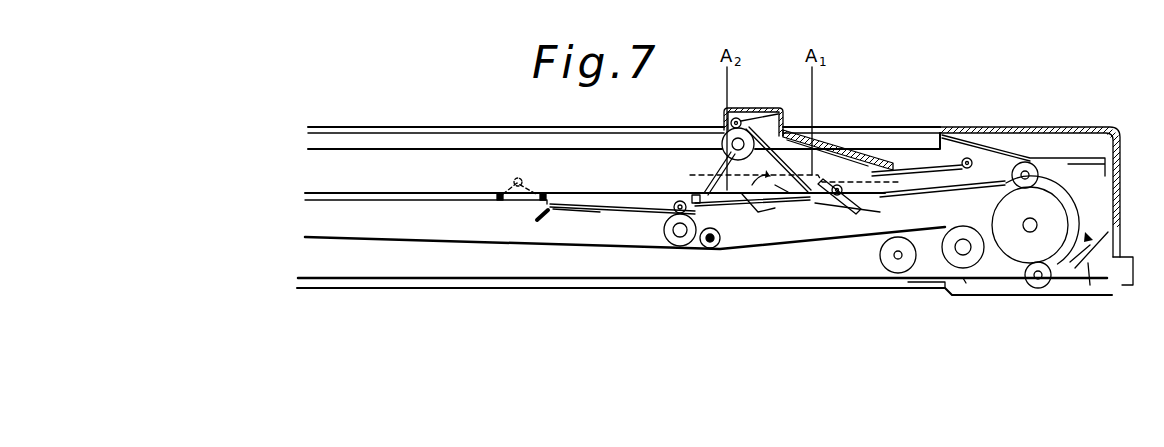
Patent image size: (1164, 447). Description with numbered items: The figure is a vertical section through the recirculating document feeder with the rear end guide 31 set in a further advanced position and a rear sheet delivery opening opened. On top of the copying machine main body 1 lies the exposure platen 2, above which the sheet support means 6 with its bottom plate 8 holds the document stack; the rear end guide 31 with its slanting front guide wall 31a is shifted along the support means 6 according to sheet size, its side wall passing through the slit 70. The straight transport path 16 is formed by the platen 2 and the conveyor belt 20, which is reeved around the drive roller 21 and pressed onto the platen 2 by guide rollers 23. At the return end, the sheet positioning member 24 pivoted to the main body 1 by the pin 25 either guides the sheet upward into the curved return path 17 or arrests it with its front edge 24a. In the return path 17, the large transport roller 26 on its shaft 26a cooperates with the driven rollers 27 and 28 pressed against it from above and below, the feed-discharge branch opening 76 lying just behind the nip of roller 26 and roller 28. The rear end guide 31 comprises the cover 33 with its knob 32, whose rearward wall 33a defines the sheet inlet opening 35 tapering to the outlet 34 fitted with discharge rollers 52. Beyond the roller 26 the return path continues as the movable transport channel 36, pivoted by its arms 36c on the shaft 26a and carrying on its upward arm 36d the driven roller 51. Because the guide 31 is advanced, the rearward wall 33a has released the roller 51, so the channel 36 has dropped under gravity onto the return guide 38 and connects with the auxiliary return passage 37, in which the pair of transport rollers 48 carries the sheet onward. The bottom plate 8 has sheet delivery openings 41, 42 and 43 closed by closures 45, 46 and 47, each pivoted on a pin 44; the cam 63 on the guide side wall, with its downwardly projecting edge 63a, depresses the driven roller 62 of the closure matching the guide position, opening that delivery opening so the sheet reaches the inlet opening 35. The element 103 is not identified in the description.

The main body 1 is at (1104, 288).
The exposure platen 2 is at (490, 273).
The sheet support means 6 is at (412, 157).
The bottom plate 8 is at (405, 195).
The straight transport path 16 is at (435, 279).
The curved return path 17 is at (1080, 217).
The conveyor belt 20 is at (475, 238).
The drive roller 21 is at (944, 251).
The guide rollers 23 is at (893, 277).
The sheet positioning member 24 is at (935, 287).
The front edge 24a is at (896, 292).
The pin 25 is at (965, 278).
The transport roller 26 is at (1010, 262).
The shaft 26a is at (1043, 290).
The driven roller 27 is at (1026, 162).
The driven roller 28 is at (1034, 245).
The rear end guide 31 is at (790, 112).
The front guide wall 31a is at (722, 133).
The knob 32 is at (760, 108).
The cover 33 is at (865, 150).
The rearward wall 33a is at (843, 148).
The outlet 34 is at (730, 130).
The sheet inlet opening 35 is at (872, 173).
The movable transport channel 36 is at (982, 190).
The arms 36c is at (1052, 187).
The upward arm 36d is at (983, 173).
The auxiliary return passage 37 is at (760, 212).
The return guide 38 is at (557, 210).
The sheet delivery opening 41 is at (836, 207).
The sheet delivery opening 42 is at (717, 203).
The sheet delivery opening 43 is at (544, 194).
The pin 44 is at (500, 193).
The closure 45 is at (806, 195).
The closure 46 is at (703, 245).
The closure 47 is at (524, 200).
The transport rollers 48 is at (665, 235).
The driven roller 51 is at (967, 158).
The discharge rollers 52 is at (760, 110).
The driven roller 62 is at (512, 180).
The cam 63 is at (772, 175).
The downwardly projecting edge 63a is at (872, 195).
The slit 70 is at (453, 140).
The feed-discharge branch opening 76 is at (1104, 252).
The member 103 is at (1089, 285).